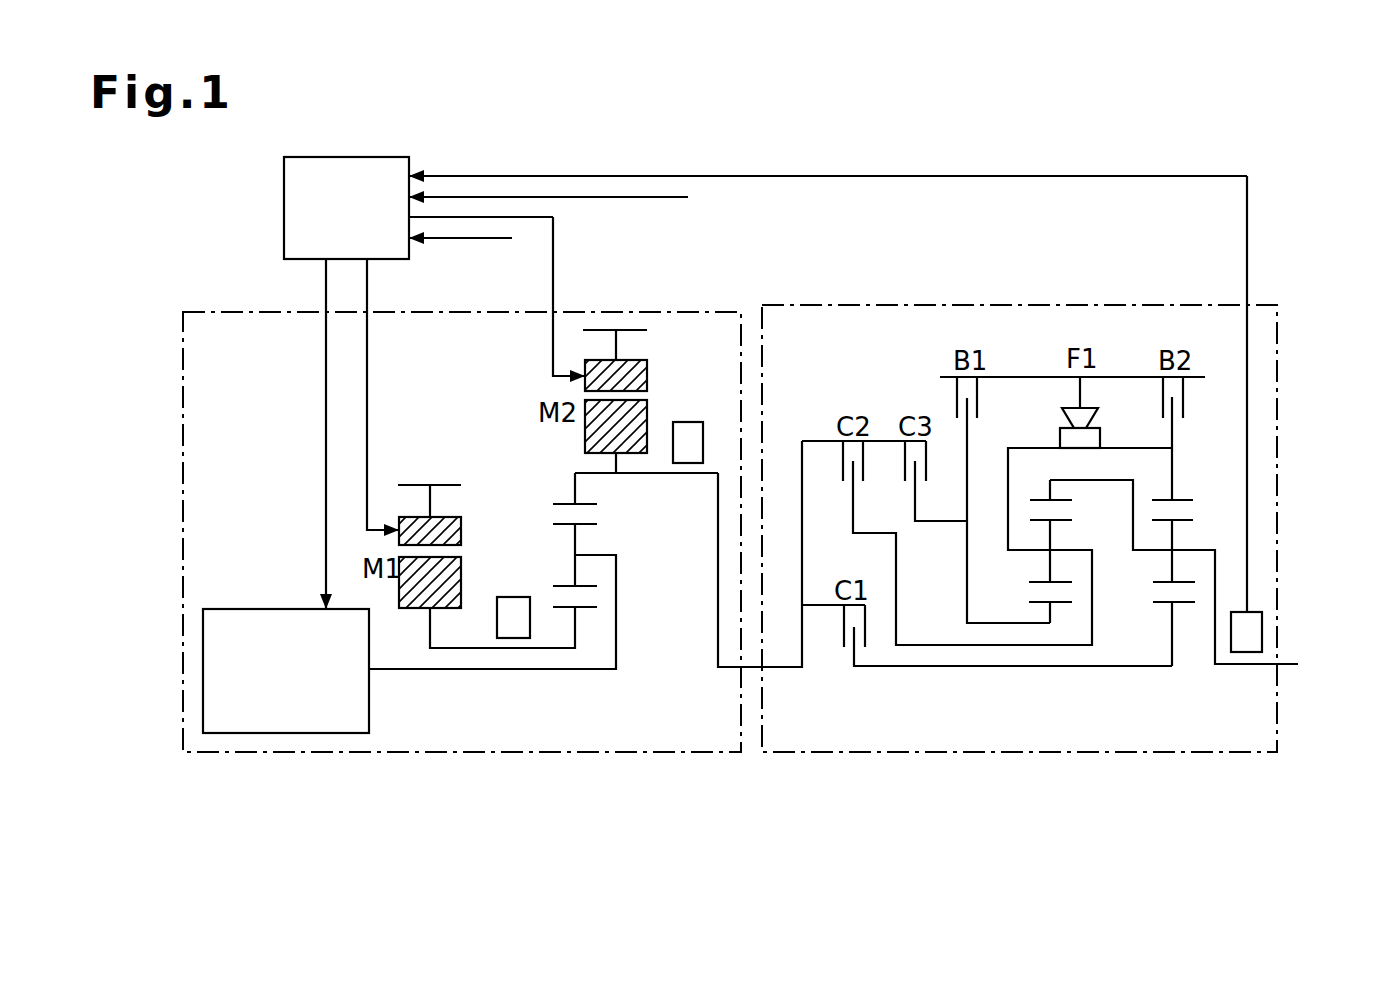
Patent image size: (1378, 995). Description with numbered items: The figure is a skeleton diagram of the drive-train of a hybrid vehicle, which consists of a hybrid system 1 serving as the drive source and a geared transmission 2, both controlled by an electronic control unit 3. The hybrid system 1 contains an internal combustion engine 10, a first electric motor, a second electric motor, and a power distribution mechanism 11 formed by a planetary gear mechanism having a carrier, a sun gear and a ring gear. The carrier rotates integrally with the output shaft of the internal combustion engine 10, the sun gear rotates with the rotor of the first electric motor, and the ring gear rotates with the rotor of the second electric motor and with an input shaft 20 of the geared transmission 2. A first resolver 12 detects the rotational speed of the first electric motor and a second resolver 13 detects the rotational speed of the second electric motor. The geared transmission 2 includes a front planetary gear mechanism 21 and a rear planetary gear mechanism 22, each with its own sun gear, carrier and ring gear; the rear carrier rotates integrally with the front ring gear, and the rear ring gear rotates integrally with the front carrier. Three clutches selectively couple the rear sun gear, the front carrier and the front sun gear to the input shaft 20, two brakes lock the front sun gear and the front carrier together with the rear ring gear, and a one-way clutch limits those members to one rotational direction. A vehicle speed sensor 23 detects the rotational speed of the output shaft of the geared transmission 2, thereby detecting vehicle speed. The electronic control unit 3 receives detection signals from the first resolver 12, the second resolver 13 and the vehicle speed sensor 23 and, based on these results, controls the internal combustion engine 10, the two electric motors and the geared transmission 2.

The hybrid system 1 is at (660, 753).
The geared transmission 2 is at (826, 753).
The electronic control unit 3 is at (286, 210).
The internal combustion engine 10 is at (248, 609).
The power distribution mechanism 11 is at (559, 496).
The first resolver 12 is at (500, 597).
The second resolver 13 is at (703, 440).
The input shaft 20 is at (784, 668).
The front planetary gear mechanism 21 is at (1032, 489).
The rear planetary gear mechanism 22 is at (1191, 486).
The vehicle speed sensor 23 is at (1262, 632).